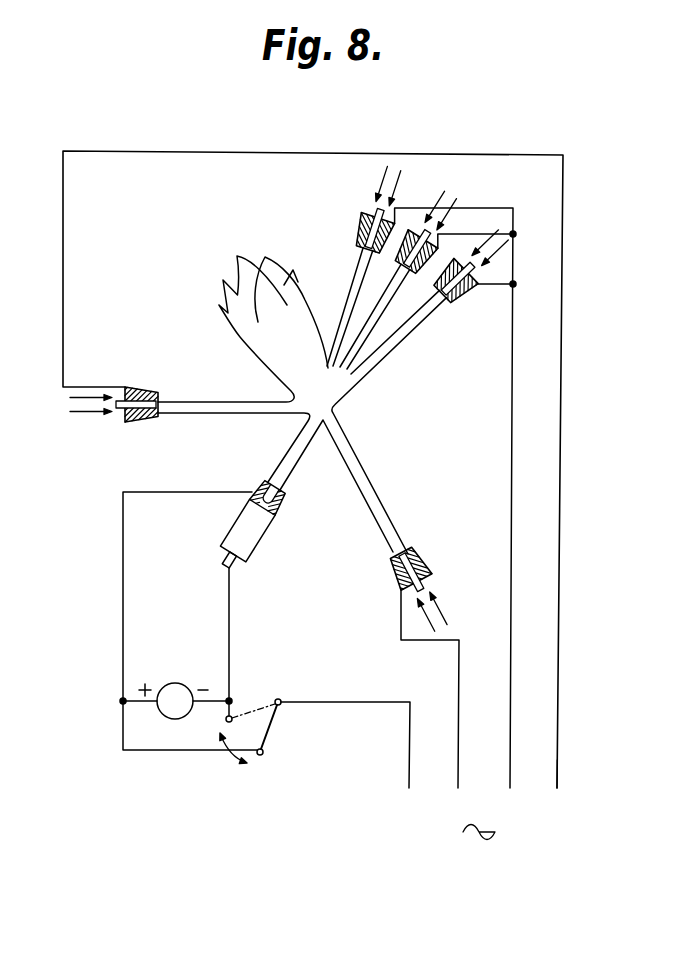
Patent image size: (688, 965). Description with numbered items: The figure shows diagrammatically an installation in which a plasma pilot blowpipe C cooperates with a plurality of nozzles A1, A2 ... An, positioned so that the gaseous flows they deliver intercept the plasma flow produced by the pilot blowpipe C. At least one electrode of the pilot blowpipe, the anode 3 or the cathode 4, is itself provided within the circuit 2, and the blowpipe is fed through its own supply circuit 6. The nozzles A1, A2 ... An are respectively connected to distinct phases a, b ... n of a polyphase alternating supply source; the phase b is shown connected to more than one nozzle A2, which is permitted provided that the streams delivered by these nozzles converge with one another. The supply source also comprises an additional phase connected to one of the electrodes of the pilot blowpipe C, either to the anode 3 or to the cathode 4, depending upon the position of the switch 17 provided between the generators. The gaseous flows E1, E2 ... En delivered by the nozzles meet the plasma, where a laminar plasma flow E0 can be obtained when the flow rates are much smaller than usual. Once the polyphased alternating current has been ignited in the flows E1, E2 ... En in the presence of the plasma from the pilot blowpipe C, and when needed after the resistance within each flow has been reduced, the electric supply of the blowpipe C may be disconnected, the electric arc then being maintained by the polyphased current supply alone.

The circuit 2 is at (317, 153).
The phase n is at (550, 788).
The nozzle An is at (147, 386).
The flow En is at (218, 406).
The laminar plasma flow E0 is at (265, 284).
The flow E2 is at (382, 308).
The flow E1 is at (360, 473).
The nozzle A2 is at (433, 234).
The phase b is at (457, 512).
The nozzle A1 is at (426, 557).
The phase a is at (448, 715).
The anode 3 is at (264, 517).
The pilot blowpipe C is at (255, 538).
The cathode 4 is at (258, 491).
The supply circuit 6 is at (123, 603).
The switch 17 is at (273, 719).